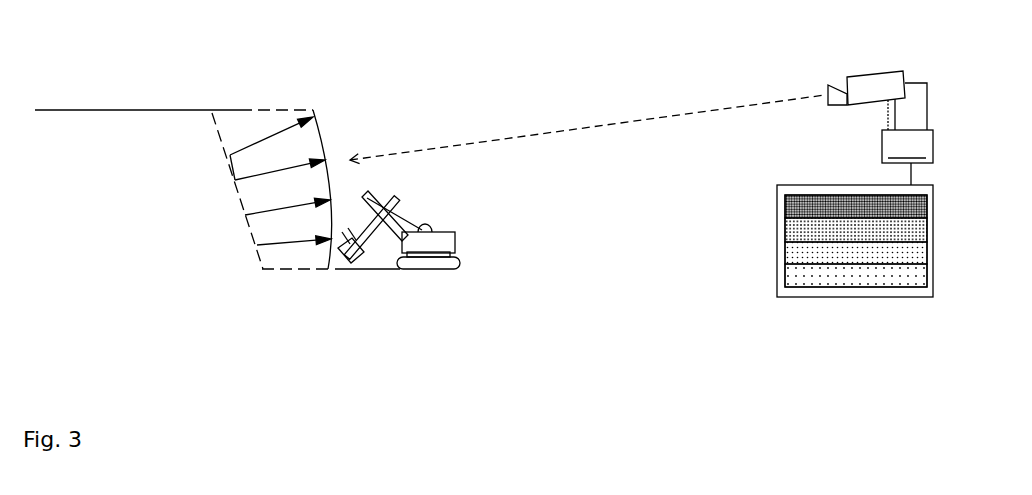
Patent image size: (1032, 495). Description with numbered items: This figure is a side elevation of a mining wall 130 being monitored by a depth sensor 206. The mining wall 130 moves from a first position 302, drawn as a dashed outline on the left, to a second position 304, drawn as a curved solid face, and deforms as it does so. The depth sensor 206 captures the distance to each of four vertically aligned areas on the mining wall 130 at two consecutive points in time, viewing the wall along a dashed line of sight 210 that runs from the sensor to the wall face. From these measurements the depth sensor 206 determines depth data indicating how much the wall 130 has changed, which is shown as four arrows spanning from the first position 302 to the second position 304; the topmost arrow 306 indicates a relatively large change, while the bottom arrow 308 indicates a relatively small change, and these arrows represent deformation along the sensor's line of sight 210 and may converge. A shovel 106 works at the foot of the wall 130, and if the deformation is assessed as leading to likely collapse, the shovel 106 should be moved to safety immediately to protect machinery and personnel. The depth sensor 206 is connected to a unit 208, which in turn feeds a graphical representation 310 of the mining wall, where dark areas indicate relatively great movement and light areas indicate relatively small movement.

The mining wall 130 is at (225, 56).
The first position 302 is at (225, 163).
The second position 304 is at (317, 133).
The topmost arrow 306 is at (277, 128).
The bottom arrow 308 is at (287, 245).
The shovel 106 is at (436, 230).
The camera line of sight 210 is at (625, 122).
The depth sensor 206 is at (883, 73).
The controller 208 is at (907, 157).
The graphical representation 310 is at (777, 255).